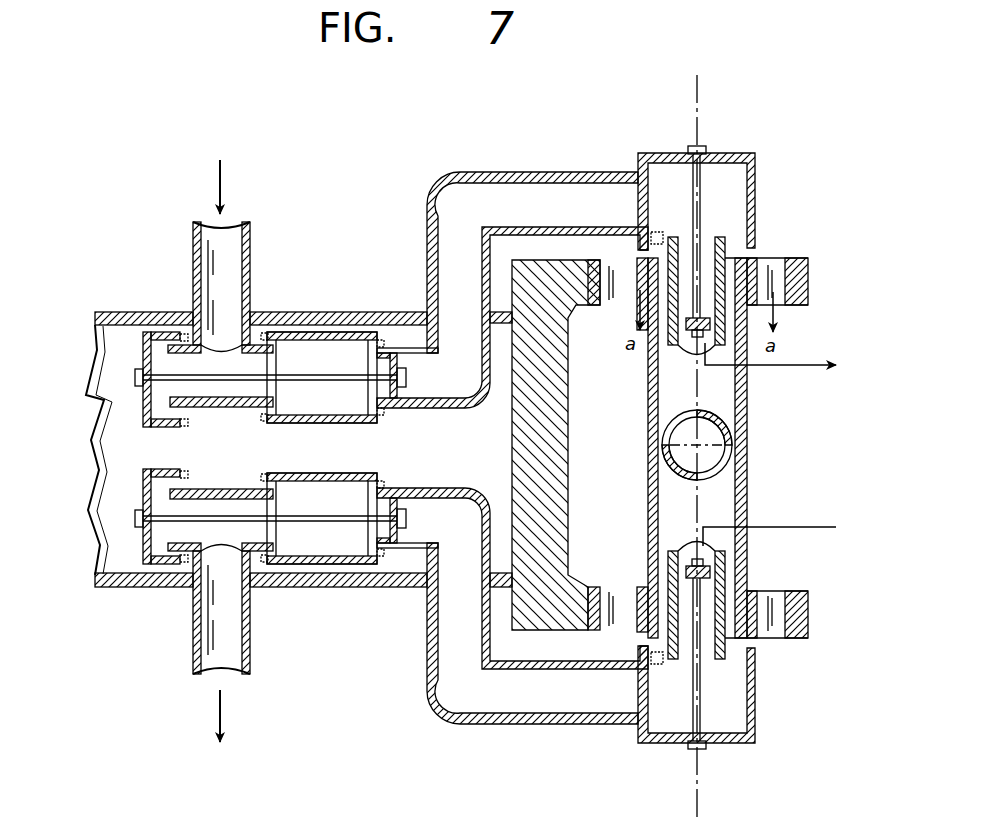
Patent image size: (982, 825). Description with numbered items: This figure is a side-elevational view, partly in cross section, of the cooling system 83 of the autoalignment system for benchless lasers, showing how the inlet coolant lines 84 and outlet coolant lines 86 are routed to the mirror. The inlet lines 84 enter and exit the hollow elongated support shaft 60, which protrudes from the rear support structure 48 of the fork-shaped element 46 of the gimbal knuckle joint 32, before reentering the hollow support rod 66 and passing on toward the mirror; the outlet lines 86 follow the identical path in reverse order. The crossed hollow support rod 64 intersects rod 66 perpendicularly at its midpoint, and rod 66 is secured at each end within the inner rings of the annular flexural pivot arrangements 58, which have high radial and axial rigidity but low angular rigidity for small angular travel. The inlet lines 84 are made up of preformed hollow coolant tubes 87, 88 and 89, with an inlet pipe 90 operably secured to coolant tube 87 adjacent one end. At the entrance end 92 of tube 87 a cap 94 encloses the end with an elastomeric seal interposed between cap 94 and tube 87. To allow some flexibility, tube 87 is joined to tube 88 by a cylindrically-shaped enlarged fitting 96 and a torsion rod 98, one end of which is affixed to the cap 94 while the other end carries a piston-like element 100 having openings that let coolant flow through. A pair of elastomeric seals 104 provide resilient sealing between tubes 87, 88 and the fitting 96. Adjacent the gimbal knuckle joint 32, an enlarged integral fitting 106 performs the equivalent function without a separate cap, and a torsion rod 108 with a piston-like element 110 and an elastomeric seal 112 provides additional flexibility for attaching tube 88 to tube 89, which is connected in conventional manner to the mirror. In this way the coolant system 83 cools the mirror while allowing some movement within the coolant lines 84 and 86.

The gimbal knuckle joint 32 is at (505, 255).
The fork-shaped element 46 is at (556, 636).
The rear support structure 48 is at (556, 455).
The annular flexural pivot arrangement 58 is at (772, 256).
The hollow elongated support shaft 60 is at (380, 590).
The hollow support rod 64 is at (738, 472).
The hollow support rod 66 is at (750, 392).
The cooling system 83 is at (326, 652).
The inlet coolant lines 84 is at (390, 322).
The outlet coolant lines 86 is at (430, 706).
The coolant tube 87 is at (215, 412).
The coolant tube 88 is at (427, 248).
The coolant tube 89 is at (668, 340).
The inlet pipe 90 is at (250, 252).
The entrance end 92 is at (190, 396).
The cap 94 is at (143, 420).
The cylindrically-shaped enlarged fitting 96 is at (320, 424).
The torsion rod 98 is at (268, 424).
The piston-like element 100 is at (420, 405).
The elastomeric seals 104 is at (266, 332).
The enlarged integral fitting 106 is at (755, 188).
The torsion rod 108 is at (706, 150).
The piston-like element 110 is at (692, 350).
The elastomeric seal 112 is at (666, 210).